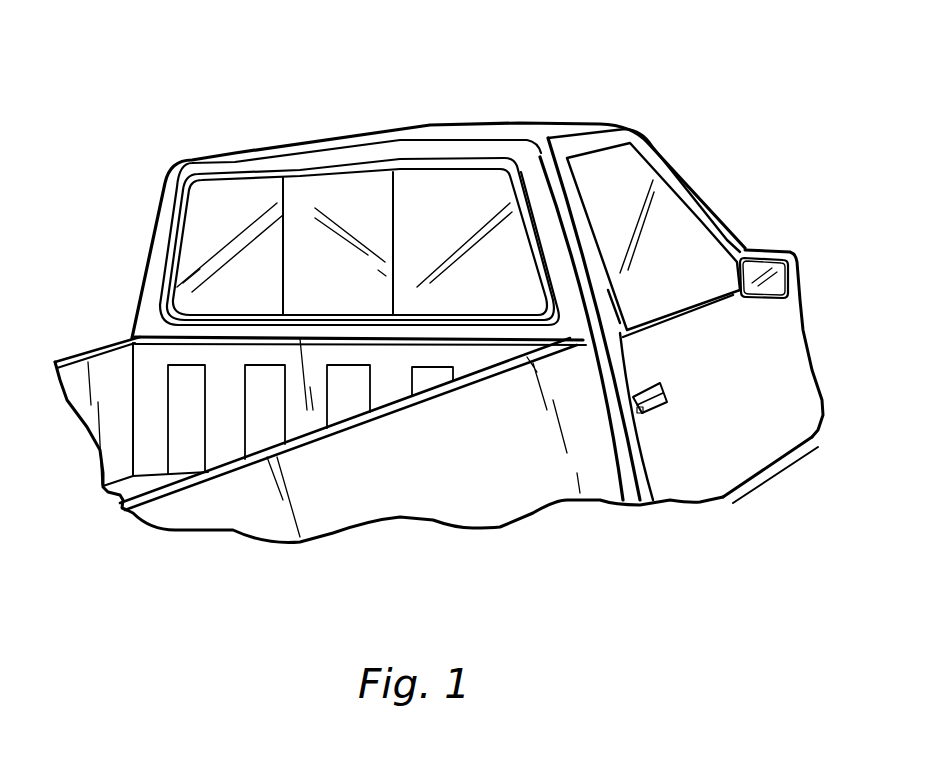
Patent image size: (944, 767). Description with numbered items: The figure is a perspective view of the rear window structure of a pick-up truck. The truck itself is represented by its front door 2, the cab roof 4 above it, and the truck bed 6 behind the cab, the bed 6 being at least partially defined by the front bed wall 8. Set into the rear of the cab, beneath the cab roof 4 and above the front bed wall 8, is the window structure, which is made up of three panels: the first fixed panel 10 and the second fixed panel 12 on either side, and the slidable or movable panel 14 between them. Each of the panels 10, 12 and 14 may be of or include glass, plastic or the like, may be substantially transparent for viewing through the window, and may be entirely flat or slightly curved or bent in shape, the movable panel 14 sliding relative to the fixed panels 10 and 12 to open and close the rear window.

The front door 2 is at (697, 427).
The cab roof 4 is at (497, 122).
The truck bed 6 is at (113, 382).
The front bed wall 8 is at (223, 407).
The first fixed panel 10 is at (253, 195).
The second fixed panel 12 is at (433, 190).
The slidable panel 14 is at (337, 197).